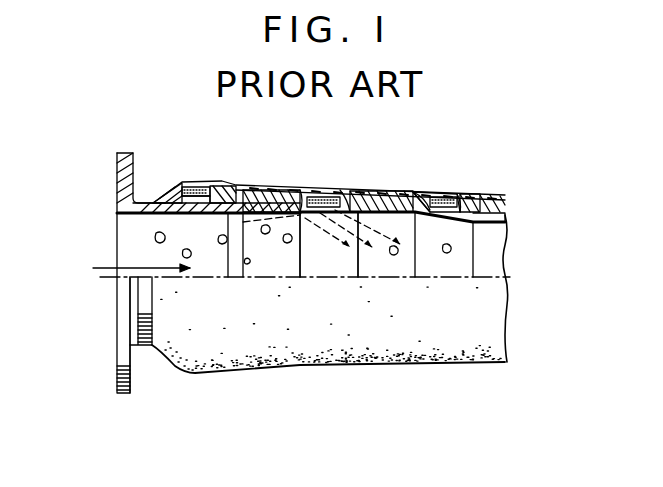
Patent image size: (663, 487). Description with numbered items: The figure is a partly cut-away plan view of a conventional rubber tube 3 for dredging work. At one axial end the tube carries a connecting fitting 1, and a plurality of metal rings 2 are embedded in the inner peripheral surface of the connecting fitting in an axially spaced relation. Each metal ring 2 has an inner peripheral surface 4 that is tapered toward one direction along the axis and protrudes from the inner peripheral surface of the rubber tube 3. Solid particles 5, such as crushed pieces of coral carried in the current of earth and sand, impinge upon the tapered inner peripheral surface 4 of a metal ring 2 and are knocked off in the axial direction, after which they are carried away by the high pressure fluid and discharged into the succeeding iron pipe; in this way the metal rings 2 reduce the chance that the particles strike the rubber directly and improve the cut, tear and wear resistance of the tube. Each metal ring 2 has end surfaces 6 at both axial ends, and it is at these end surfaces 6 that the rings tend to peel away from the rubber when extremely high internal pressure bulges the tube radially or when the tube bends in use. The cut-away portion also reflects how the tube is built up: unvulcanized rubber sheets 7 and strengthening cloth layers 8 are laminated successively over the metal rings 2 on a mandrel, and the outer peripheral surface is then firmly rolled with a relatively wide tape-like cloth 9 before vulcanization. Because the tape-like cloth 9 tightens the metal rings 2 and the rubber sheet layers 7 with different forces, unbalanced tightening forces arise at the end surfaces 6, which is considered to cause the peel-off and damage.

The connecting fitting 1 is at (125, 314).
The metal rings 2 is at (331, 262).
The rubber tube 3 is at (249, 182).
The inner peripheral surface 4 is at (322, 206).
The solid particles 5 is at (288, 241).
The end surfaces 6 is at (290, 190).
The rubber sheets 7 is at (247, 210).
The strengthening cloth layers 8 is at (213, 184).
The tape-like cloth 9 is at (424, 197).